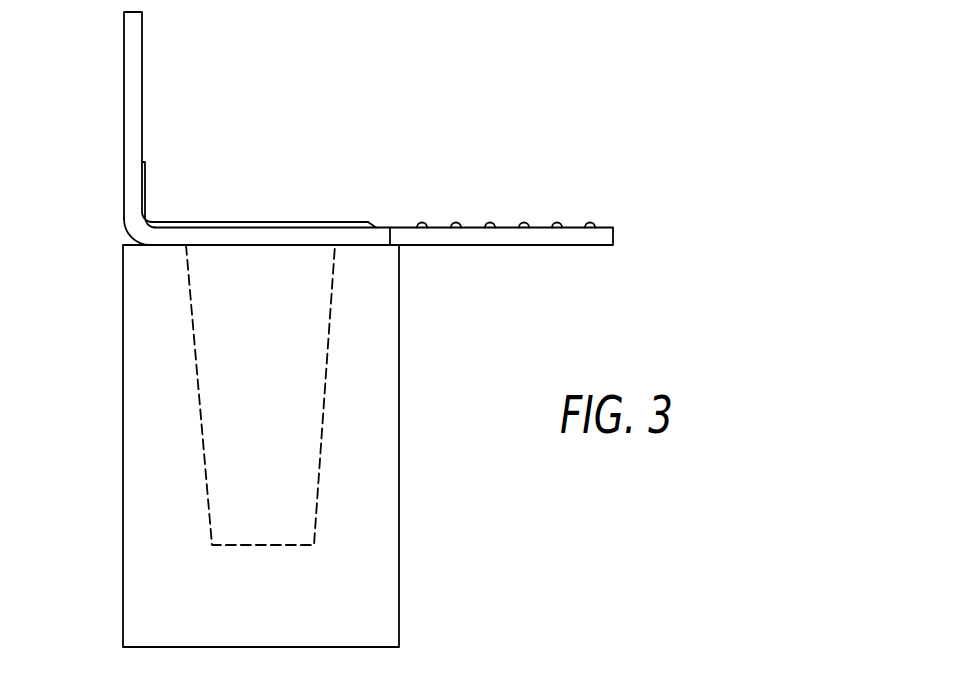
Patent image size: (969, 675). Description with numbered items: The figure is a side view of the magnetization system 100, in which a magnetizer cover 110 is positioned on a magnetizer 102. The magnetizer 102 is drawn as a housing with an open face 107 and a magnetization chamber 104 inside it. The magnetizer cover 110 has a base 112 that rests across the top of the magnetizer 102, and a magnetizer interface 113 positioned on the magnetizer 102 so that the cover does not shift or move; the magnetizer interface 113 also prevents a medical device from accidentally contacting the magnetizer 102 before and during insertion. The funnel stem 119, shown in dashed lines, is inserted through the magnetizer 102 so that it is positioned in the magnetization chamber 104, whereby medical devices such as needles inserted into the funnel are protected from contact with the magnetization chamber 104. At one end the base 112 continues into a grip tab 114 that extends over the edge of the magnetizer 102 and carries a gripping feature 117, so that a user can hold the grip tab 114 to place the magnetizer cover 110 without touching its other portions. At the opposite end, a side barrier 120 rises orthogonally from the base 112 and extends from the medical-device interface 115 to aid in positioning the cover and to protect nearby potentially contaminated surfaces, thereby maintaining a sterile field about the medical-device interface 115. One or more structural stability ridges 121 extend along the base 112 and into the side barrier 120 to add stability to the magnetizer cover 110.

The magnetization system 100 is at (744, 119).
The magnetizer 102 is at (452, 540).
The magnetization chamber 104 is at (308, 600).
The open face 107 is at (399, 457).
The magnetizer cover 110 is at (558, 157).
The base 112 is at (160, 242).
The magnetizer interface 113 is at (368, 245).
The grip tab 114 is at (613, 235).
The medical-device interface 115 is at (385, 225).
The gripping feature 117 is at (591, 222).
The funnel stem 119 is at (325, 372).
The side barrier 120 is at (142, 62).
The structural stability ridge 121 is at (250, 221).